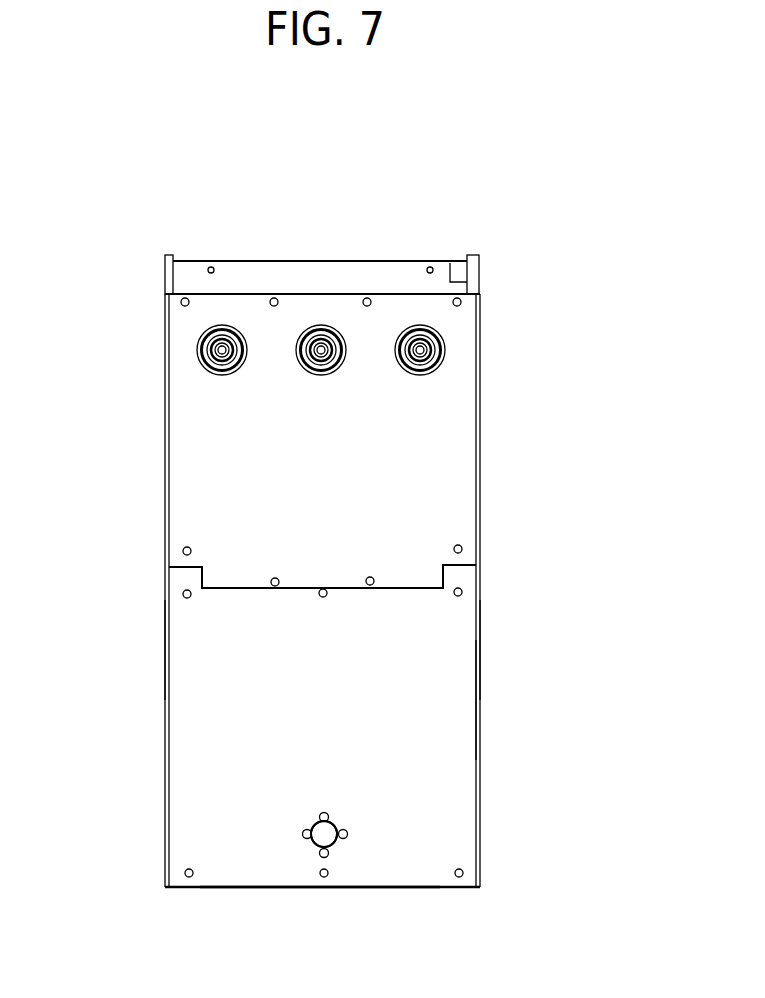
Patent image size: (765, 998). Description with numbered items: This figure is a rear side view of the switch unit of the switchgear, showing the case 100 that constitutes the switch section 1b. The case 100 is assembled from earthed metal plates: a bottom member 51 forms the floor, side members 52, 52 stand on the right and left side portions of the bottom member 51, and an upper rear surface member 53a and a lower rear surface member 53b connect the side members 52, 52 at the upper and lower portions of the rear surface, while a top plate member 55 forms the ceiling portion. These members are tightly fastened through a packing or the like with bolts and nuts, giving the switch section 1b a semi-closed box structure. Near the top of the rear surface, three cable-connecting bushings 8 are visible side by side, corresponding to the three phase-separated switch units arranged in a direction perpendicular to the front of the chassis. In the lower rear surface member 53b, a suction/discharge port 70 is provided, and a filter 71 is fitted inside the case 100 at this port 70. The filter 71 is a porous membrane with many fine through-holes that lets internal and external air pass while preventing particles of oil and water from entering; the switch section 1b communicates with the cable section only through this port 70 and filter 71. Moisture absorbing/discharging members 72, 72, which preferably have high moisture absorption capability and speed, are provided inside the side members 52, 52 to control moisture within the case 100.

The case 100 is at (485, 227).
The switch section 1b is at (217, 435).
The cable-connecting bushing 8 is at (206, 352).
The bottom member 51 is at (353, 887).
The side members 52 is at (167, 638).
The upper rear surface member 53a is at (452, 492).
The lower rear surface member 53b is at (452, 725).
The top plate member 55 is at (247, 260).
The suction/discharge port 70 is at (311, 846).
The filter 71 is at (324, 834).
The moisture absorbing/discharging members 72 is at (166, 777).